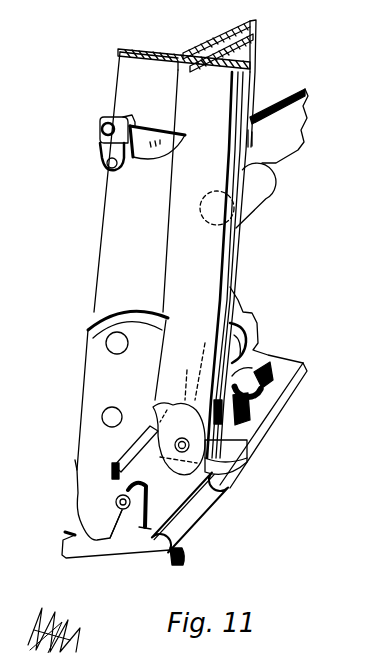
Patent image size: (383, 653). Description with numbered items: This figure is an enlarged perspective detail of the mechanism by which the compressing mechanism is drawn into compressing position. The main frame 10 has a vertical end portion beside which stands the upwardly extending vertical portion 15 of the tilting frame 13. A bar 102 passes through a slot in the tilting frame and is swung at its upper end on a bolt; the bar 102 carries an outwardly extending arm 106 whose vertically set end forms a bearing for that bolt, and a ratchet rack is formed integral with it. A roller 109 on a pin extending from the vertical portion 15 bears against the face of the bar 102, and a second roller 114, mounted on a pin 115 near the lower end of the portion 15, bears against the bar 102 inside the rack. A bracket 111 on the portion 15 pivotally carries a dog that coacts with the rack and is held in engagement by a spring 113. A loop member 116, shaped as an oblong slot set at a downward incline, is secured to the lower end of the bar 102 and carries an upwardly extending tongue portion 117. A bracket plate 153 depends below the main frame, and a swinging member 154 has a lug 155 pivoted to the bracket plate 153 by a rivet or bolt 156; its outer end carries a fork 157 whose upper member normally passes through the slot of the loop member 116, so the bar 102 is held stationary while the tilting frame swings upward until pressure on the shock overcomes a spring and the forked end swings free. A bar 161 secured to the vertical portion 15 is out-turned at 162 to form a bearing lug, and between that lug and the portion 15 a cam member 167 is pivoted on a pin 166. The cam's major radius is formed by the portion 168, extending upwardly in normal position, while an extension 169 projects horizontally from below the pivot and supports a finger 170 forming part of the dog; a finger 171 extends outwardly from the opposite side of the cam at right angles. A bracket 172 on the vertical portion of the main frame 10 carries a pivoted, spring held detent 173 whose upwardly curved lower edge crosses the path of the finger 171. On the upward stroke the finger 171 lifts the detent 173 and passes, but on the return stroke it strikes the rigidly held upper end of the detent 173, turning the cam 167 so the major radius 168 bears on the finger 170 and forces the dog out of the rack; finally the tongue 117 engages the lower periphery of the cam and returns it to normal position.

The frame 10 is at (106, 268).
The bar 102 is at (242, 48).
The bar 161 is at (223, 93).
The upwardly extending portion 15 is at (241, 251).
The arm 106 is at (287, 130).
The roller 109 is at (253, 192).
The spring held detent 173 is at (137, 120).
The bracket 172 is at (100, 148).
The bracket plate 153 is at (122, 390).
The bracket 111 is at (242, 307).
The spring 113 is at (243, 333).
The roller 114 is at (232, 398).
The pin 115 is at (262, 400).
The tilting frame 13 is at (304, 368).
The cam member 167 is at (157, 417).
The major radius portion 168 is at (199, 362).
The out-turned lower end 162 is at (189, 377).
The pin 166 is at (176, 445).
The finger 170 is at (247, 438).
The extension 169 is at (214, 452).
The finger 171 is at (117, 460).
The rivet or bolt 156 is at (116, 500).
The tongue portion 117 is at (142, 527).
The loop member 116 is at (220, 520).
The swinging member 154 is at (92, 552).
The lug 155 is at (122, 510).
The fork 157 is at (172, 557).